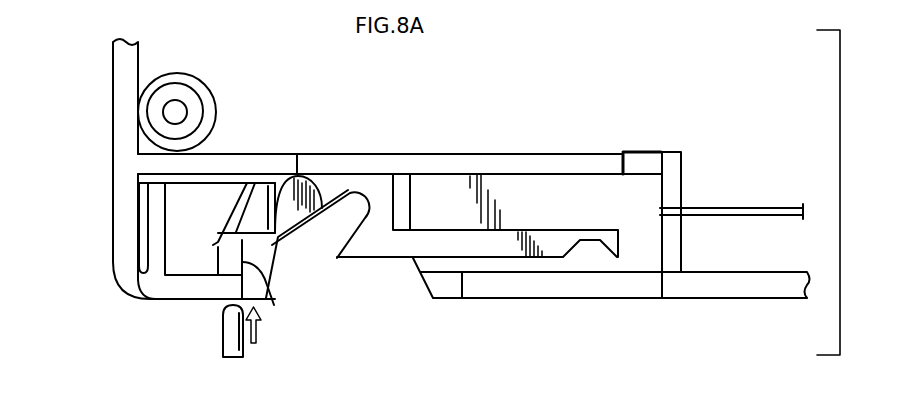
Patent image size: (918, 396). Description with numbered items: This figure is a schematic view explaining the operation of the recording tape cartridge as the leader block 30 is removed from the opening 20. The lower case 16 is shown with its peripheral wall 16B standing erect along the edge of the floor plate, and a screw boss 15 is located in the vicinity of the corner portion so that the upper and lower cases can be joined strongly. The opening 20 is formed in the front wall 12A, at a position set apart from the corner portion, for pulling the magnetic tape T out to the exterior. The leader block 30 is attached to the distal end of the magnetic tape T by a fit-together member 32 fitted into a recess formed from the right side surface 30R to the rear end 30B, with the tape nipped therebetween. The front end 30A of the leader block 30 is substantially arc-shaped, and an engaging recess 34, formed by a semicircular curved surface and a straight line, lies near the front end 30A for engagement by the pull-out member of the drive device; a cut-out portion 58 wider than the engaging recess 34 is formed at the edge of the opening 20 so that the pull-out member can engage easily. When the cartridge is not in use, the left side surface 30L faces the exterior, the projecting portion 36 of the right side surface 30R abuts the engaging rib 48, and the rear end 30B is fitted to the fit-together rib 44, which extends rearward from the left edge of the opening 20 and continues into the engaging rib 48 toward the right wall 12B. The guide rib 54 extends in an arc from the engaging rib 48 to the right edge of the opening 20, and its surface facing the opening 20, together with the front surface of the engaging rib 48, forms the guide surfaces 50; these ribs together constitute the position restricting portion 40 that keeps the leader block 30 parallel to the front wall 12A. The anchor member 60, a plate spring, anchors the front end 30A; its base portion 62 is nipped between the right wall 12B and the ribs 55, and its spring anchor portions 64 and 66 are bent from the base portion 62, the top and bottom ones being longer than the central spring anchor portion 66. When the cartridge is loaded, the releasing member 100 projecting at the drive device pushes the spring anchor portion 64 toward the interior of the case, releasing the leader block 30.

The front wall 12A is at (712, 298).
The right wall 12B is at (110, 205).
The screw boss 15 is at (173, 116).
The lower case 16 is at (110, 85).
The peripheral wall 16B is at (110, 126).
The opening 20 is at (413, 262).
The leader block 30 is at (457, 173).
The front end 30A is at (268, 198).
The rear end 30B is at (663, 195).
The left side surface 30L is at (507, 258).
The right side surface 30R is at (567, 172).
The fit-together member 32 is at (640, 163).
The engaging recess 34 is at (358, 205).
The projecting portion 36 is at (438, 187).
The position restricting portion 40 is at (685, 152).
The fit-together rib 44 is at (677, 247).
The engaging rib 48 is at (520, 160).
The guide surfaces 50 is at (243, 258).
The guide rib 54 is at (274, 305).
The ribs 55 is at (172, 203).
The cut-out portion 58 is at (425, 282).
The anchor member 60 is at (233, 172).
The base portion 62 is at (140, 225).
The spring anchor portion 64 is at (212, 246).
The spring anchor portion 66 is at (258, 238).
The releasing member 100 is at (230, 345).
The magnetic tape T is at (753, 207).